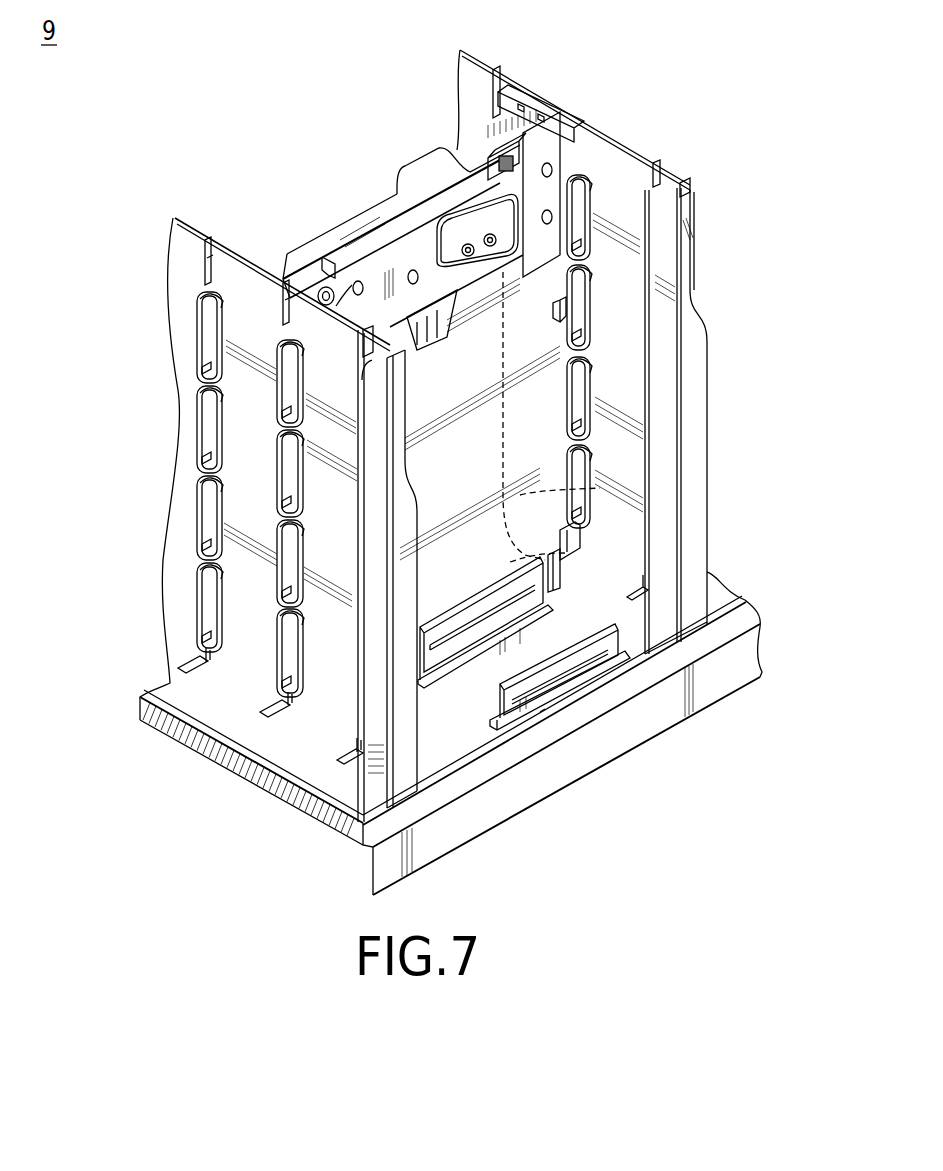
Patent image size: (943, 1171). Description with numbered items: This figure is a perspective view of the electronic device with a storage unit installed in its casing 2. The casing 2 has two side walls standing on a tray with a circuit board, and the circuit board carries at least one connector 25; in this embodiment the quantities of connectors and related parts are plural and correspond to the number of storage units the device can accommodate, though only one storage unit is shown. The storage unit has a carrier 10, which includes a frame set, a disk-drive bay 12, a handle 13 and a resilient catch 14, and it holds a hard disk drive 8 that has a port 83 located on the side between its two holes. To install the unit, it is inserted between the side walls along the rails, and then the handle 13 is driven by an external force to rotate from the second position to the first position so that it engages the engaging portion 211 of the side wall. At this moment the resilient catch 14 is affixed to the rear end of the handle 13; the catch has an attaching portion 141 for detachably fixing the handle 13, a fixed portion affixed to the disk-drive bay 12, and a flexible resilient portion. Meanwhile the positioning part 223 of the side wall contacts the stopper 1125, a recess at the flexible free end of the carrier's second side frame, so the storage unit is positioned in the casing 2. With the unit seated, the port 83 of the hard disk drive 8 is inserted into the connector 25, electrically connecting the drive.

The casing 2 is at (120, 273).
The carrier 10 is at (315, 170).
The disk-drive bay 12 is at (262, 243).
The handle 13 is at (395, 145).
The resilient catch 14 is at (466, 143).
The attaching portion 141 is at (510, 150).
The engaging portion 211 is at (277, 336).
The positioning part 223 is at (560, 493).
The stopper 1125 is at (560, 553).
The hard disk drive 8 is at (572, 598).
The port 83 is at (560, 600).
The connector 25 is at (450, 650).